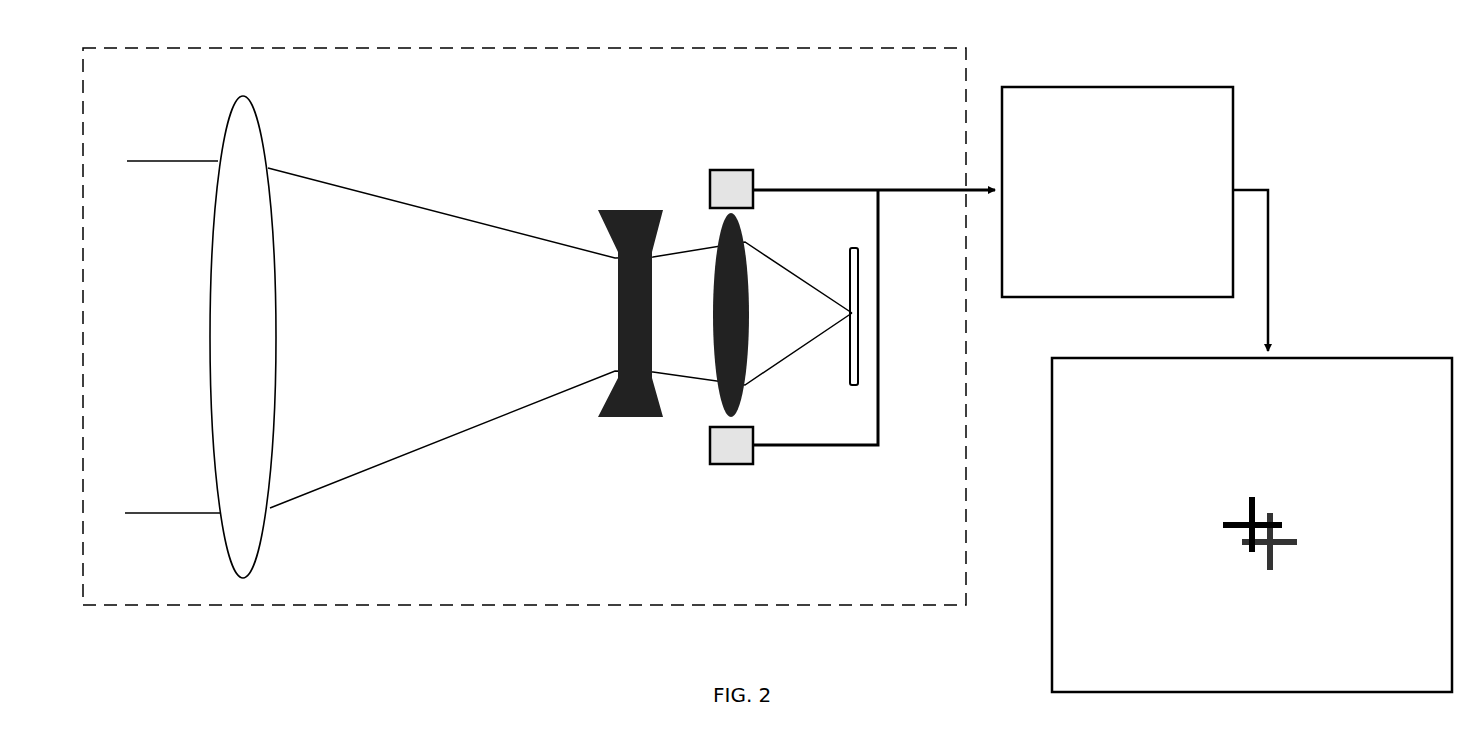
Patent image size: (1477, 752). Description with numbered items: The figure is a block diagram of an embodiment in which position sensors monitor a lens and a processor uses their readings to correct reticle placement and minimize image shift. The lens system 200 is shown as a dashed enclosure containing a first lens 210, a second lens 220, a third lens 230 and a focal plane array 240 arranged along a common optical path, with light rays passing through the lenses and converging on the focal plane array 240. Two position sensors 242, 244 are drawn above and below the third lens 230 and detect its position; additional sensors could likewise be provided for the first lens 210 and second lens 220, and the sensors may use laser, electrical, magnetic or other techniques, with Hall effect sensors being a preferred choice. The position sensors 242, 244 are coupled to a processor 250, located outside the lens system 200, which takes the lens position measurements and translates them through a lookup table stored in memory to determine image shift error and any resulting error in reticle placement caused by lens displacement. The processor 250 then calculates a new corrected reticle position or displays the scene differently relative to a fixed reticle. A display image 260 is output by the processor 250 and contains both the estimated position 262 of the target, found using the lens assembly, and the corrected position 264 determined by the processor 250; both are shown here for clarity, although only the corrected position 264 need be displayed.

The lens system 200 is at (524, 326).
The first lens 210 is at (243, 337).
The second lens 220 is at (630, 313).
The third lens 230 is at (728, 315).
The focal plane array (FPA) 240 is at (853, 346).
The position sensor 242 is at (838, 157).
The position sensor 244 is at (779, 356).
The processor 250 is at (1135, 219).
The display image 260 is at (1252, 525).
The estimated position 262 is at (1266, 500).
The corrected position 264 is at (1287, 557).